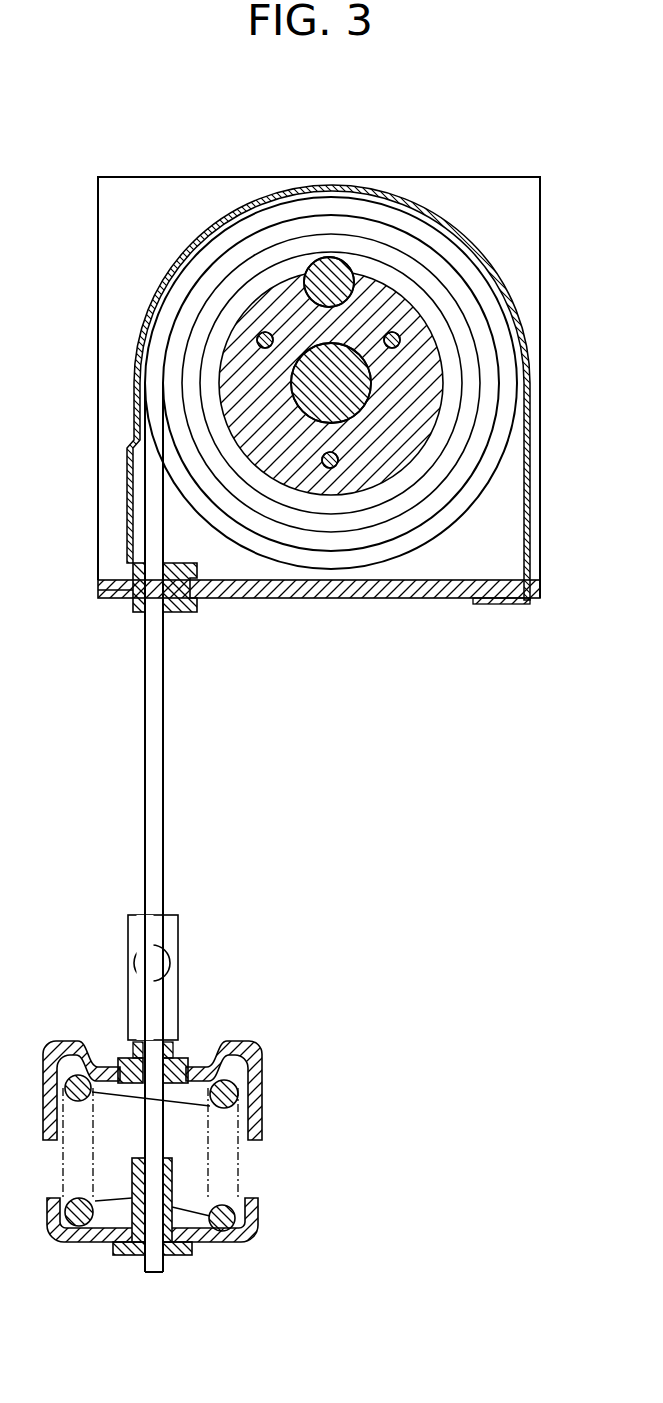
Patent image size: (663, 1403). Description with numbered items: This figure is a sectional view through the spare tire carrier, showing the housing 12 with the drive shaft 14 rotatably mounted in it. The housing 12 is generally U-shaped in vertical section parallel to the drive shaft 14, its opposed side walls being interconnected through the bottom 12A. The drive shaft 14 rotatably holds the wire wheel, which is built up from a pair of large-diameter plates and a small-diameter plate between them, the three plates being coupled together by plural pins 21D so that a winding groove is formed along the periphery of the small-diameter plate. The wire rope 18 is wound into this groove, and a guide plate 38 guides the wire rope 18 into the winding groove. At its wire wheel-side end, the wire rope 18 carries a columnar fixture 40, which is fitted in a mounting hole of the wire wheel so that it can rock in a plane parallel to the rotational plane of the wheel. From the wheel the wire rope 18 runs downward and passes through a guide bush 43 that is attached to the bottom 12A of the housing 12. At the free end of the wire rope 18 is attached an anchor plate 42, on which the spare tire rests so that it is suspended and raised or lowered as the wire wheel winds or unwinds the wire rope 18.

The housing 12 is at (540, 240).
The bottom of the housing 12A is at (438, 588).
The guide plate 38 is at (517, 307).
The drive shaft 14 is at (355, 400).
The columnar fixture 40 is at (331, 282).
The pins 21D is at (330, 468).
The guide bush 43 is at (176, 608).
The wire rope 18 is at (157, 803).
The anchor plate 42 is at (262, 1102).